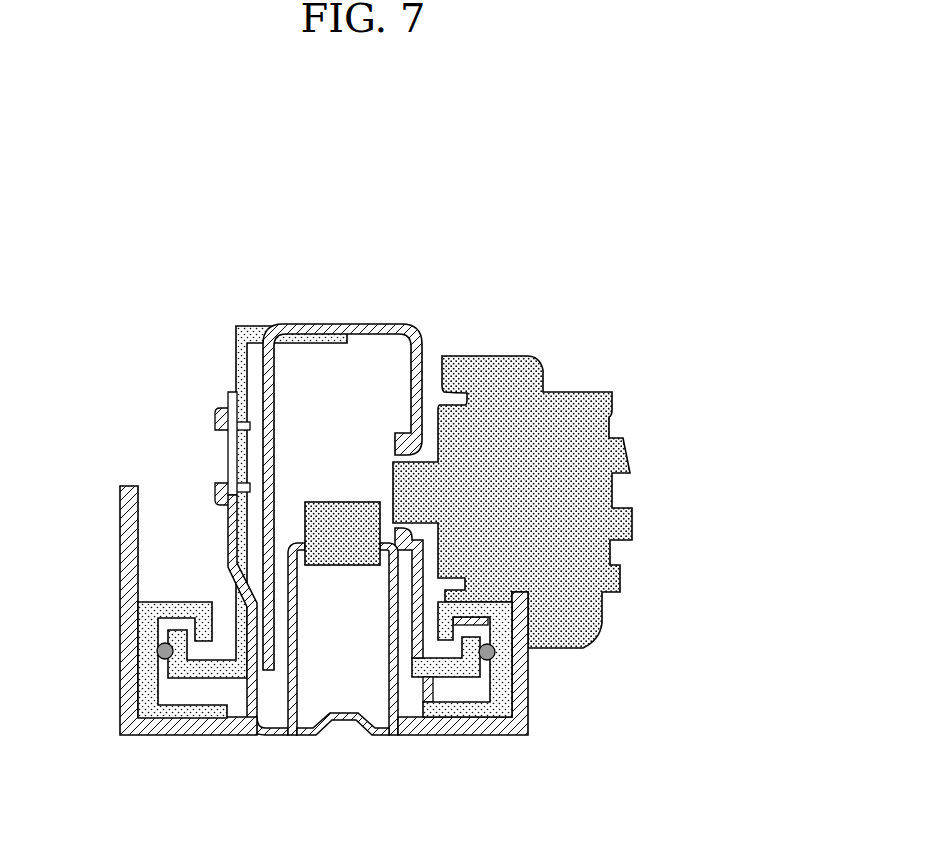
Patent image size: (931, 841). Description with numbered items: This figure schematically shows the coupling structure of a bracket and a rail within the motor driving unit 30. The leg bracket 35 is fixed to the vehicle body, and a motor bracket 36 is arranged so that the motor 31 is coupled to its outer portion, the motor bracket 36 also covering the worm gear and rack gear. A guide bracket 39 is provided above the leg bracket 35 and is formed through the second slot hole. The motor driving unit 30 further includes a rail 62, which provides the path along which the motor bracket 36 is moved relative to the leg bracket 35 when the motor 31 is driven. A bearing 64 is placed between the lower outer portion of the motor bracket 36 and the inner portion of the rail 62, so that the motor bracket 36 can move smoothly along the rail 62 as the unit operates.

The motor driving unit 30 is at (344, 219).
The motor 31 is at (498, 365).
The leg bracket 35 is at (132, 551).
The motor bracket 36 is at (254, 332).
The guide bracket 39 is at (296, 693).
The rail 62 is at (148, 631).
The bearing 64 is at (160, 653).